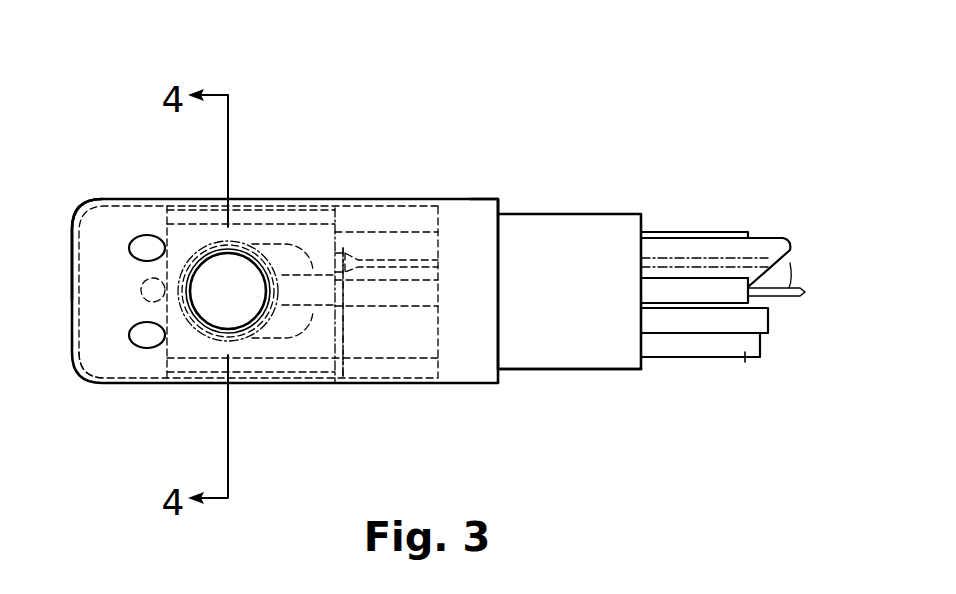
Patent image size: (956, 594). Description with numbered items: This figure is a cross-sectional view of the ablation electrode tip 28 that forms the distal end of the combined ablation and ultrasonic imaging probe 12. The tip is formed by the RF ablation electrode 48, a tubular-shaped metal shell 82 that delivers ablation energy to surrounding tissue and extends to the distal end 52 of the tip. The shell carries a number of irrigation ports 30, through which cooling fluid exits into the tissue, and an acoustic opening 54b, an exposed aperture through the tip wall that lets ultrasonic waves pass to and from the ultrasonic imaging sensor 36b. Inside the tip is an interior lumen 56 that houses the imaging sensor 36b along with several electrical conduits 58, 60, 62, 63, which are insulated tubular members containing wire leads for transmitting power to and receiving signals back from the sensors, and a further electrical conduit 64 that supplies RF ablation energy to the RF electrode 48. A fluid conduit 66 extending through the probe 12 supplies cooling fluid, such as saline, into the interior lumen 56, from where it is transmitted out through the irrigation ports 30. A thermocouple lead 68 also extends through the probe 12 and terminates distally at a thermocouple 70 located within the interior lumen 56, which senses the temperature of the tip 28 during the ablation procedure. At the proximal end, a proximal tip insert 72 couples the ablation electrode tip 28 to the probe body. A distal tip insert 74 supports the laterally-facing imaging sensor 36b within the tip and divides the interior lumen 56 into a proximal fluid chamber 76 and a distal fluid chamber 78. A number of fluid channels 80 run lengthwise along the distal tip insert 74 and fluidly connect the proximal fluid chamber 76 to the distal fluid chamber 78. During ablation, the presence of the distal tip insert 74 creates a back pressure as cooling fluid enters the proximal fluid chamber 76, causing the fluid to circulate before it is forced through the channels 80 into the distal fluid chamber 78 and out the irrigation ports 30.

The combined ablation and ultrasonic imaging probe 12 is at (590, 90).
The ablation electrode tip 28 is at (498, 134).
The irrigation ports 30 is at (147, 235).
The ultrasonic imaging sensor 36b is at (242, 265).
The RF ablation electrode 48 is at (380, 383).
The distal end 52 is at (75, 222).
The acoustic opening 54b is at (215, 330).
The interior lumen 56 is at (417, 267).
The electrical conduit 58 is at (746, 360).
The electrical conduit 60 is at (766, 312).
The electrical conduit 62 is at (740, 287).
The electrical conduit 63 is at (805, 291).
The electrical conduit 64 is at (738, 232).
The fluid conduit 66 is at (768, 238).
The thermocouple lead 68 is at (770, 257).
The thermocouple 70 is at (72, 330).
The proximal tip insert 72 is at (612, 222).
The distal tip insert 74 is at (618, 372).
The proximal fluid chamber 76 is at (397, 220).
The distal fluid chamber 78 is at (108, 362).
The fluid channels 80 is at (308, 225).
The tubular-shaped shell 82 is at (497, 202).